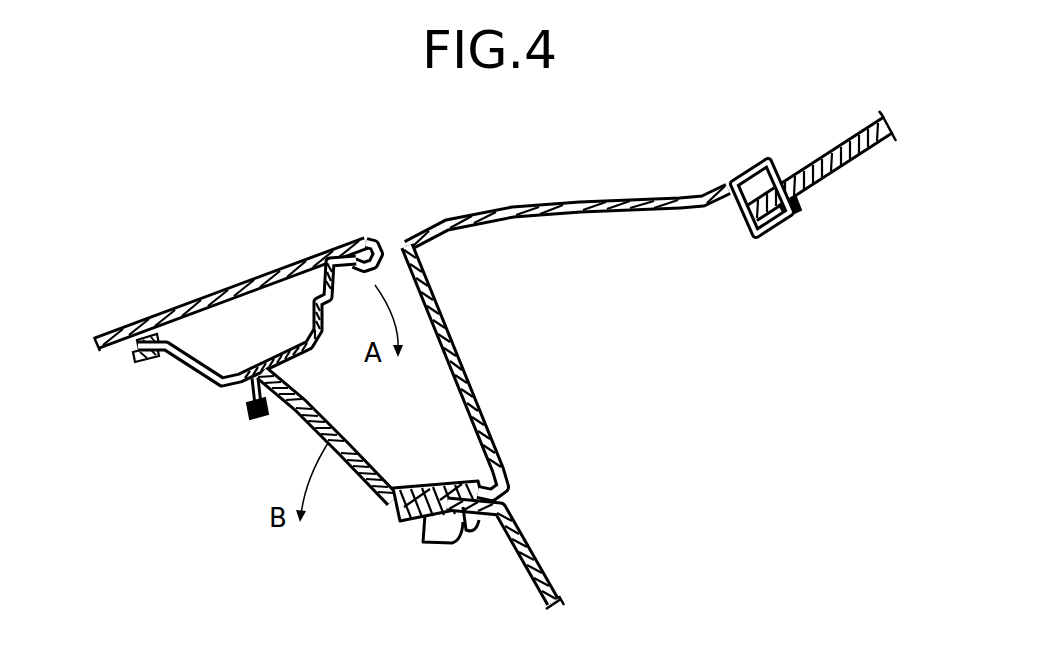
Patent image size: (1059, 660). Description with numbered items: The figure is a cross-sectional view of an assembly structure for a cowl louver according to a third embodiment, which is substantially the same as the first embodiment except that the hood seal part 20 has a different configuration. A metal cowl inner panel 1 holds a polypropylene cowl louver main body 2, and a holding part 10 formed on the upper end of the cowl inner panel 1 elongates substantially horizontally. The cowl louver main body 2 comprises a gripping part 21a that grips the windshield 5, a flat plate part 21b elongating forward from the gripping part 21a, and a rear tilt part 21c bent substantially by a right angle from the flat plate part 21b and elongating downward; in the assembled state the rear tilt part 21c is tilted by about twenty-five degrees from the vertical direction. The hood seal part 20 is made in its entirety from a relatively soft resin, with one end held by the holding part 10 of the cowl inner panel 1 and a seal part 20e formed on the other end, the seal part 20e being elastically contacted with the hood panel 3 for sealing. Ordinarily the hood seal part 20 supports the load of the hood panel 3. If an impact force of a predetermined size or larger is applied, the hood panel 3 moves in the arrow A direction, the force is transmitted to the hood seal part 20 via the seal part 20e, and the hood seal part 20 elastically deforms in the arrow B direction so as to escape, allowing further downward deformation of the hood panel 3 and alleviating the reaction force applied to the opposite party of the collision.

The cowl inner panel 1 is at (543, 549).
The cowl louver main body 2 is at (650, 292).
The hood panel 3 is at (237, 283).
The windshield 5 is at (827, 187).
The holding part 10 is at (487, 513).
The hood seal part 20 is at (311, 390).
The seal part 20e is at (245, 380).
The gripping part 21a is at (740, 170).
The flat plate part 21b is at (615, 215).
The rear tilt part 21c is at (466, 364).